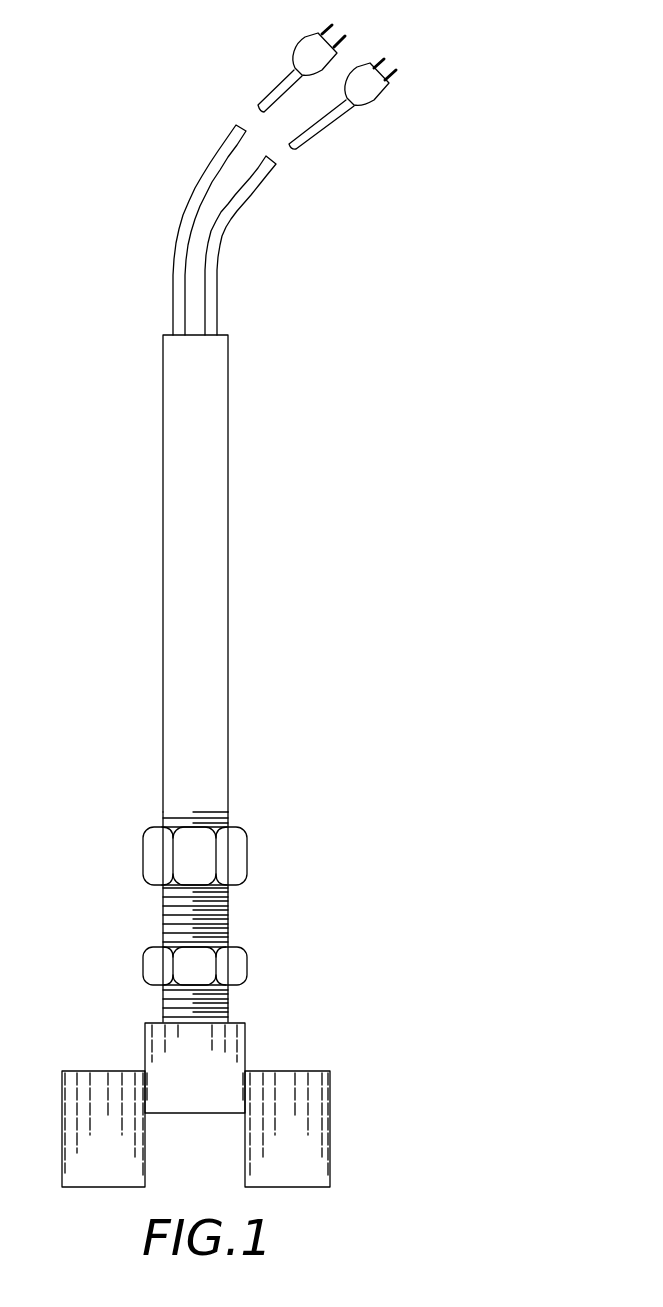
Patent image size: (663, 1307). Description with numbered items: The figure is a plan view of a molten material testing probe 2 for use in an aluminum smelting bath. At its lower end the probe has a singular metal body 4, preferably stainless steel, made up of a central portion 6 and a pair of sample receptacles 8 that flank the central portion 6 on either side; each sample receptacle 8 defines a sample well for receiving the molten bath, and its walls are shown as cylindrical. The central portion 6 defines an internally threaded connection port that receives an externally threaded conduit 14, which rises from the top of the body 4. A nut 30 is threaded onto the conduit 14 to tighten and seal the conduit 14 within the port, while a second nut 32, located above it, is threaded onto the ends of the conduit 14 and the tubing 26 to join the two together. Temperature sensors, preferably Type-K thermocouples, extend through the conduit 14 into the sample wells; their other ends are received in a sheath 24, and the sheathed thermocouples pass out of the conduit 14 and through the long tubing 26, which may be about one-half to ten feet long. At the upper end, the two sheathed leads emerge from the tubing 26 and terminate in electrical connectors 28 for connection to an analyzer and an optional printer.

The molten material testing probe 2 is at (412, 82).
The singular metal body 4 is at (338, 1090).
The central portion 6 is at (145, 1040).
The sample receptacles 8 is at (62, 1107).
The externally threaded conduit 14 is at (228, 1000).
The sheath 24 is at (190, 202).
The tubing 26 is at (229, 473).
The electrical connectors 28 is at (302, 40).
The nut 30 is at (143, 965).
The nut 32 is at (143, 848).